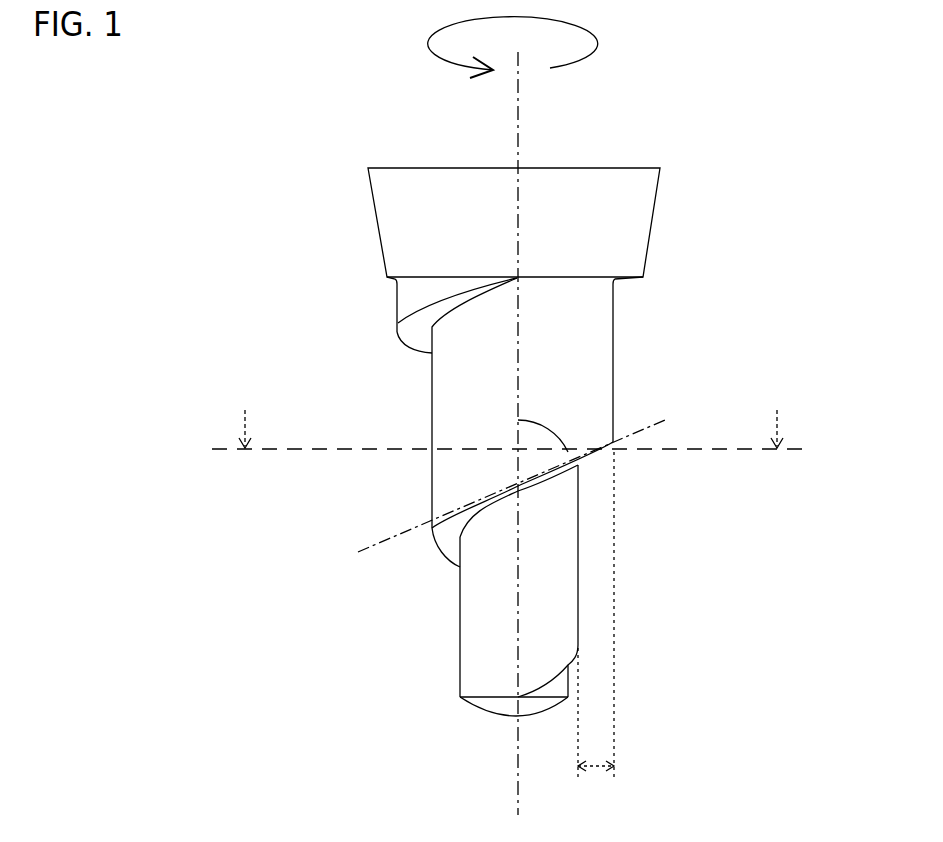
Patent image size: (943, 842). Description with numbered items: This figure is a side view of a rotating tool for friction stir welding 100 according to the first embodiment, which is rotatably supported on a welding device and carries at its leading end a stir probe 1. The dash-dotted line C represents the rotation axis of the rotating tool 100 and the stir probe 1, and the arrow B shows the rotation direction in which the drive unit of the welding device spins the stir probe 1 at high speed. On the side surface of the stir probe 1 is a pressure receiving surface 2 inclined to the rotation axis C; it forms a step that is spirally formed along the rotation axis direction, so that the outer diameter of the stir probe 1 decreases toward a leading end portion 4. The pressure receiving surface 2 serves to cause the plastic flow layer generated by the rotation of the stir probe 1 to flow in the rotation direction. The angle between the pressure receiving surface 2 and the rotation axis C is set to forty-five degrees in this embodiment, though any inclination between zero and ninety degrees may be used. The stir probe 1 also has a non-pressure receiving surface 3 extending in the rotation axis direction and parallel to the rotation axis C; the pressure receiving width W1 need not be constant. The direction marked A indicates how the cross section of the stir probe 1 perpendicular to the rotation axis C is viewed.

The rotating tool for friction stir welding 100 is at (378, 218).
The stir probe 1 is at (432, 393).
The pressure receiving surface 2 is at (448, 532).
The non-pressure receiving surface 3 is at (565, 593).
The leading end portion 4 is at (492, 717).
The rotation direction arrow B is at (603, 32).
The rotation axis C is at (518, 128).
The viewing direction of the cross section A is at (512, 412).
The pressure receiving width W1 is at (596, 632).